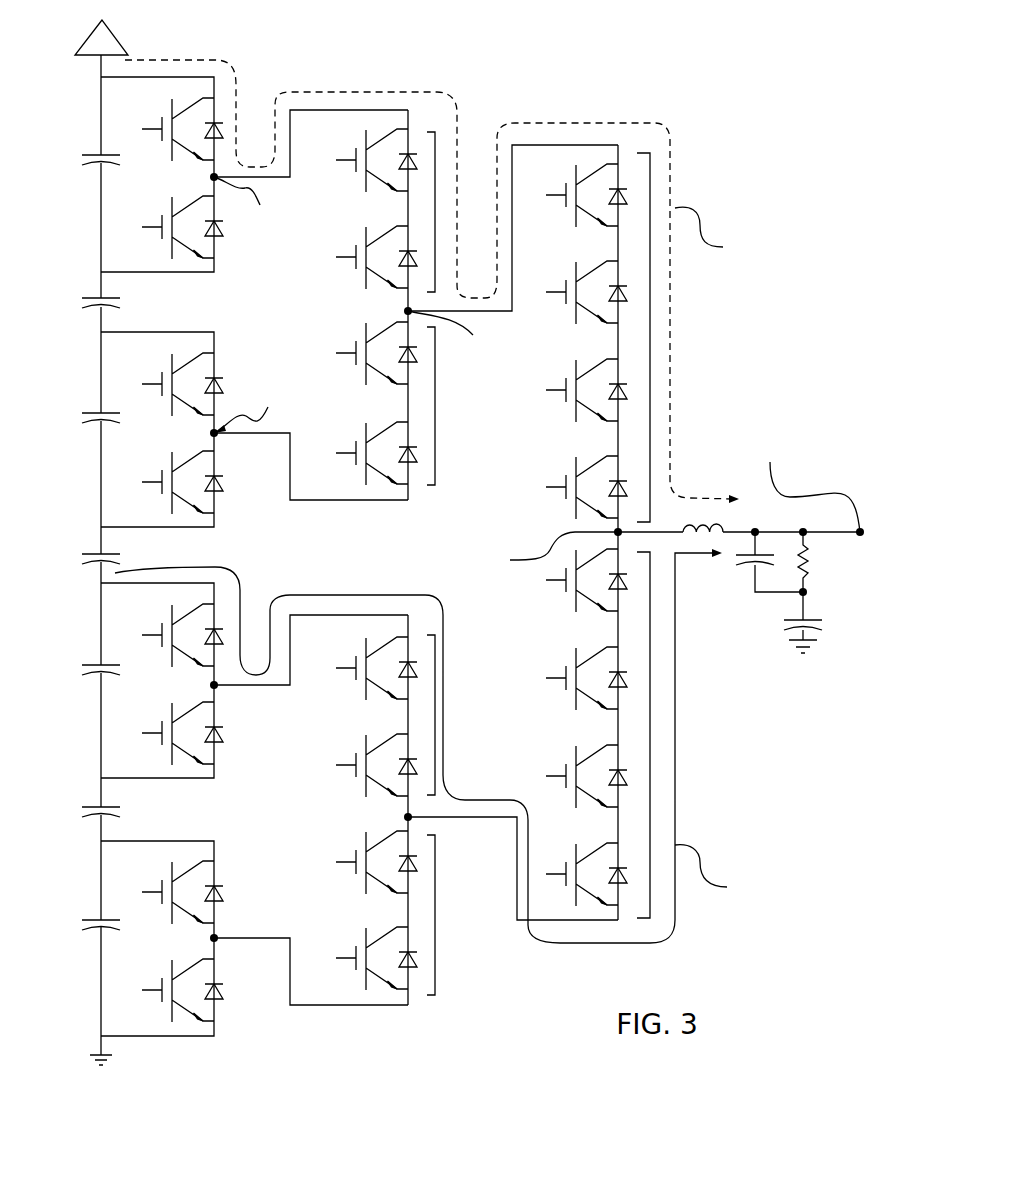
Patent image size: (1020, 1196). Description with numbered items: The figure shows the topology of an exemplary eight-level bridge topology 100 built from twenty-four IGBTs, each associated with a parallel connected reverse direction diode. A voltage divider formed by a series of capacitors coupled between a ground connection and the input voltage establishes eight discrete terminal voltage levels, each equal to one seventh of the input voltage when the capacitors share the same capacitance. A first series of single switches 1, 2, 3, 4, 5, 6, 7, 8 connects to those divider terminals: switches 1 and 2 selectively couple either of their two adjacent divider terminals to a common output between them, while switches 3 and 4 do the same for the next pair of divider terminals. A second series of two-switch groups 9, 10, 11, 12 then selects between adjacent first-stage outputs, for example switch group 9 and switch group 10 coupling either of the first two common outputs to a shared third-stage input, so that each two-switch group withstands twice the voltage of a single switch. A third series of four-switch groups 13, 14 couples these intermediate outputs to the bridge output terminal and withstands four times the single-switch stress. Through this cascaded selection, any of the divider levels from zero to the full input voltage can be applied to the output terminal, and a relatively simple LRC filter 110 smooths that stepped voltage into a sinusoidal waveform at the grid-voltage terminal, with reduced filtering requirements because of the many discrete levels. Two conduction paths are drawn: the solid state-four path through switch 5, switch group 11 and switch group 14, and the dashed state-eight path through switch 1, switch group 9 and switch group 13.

The switch 1 is at (182, 129).
The switch 2 is at (182, 227).
The switch 3 is at (182, 384).
The switch 4 is at (182, 482).
The switch 5 is at (182, 635).
The switch 6 is at (182, 733).
The switch 7 is at (182, 892).
The switch 8 is at (182, 990).
The switch group 9 is at (435, 212).
The switch group 10 is at (435, 407).
The switch group 11 is at (435, 715).
The switch group 12 is at (435, 915).
The switch group 13 is at (650, 337).
The switch group 14 is at (650, 737).
The eight-level bridge topology 100 is at (635, 79).
The filter 110 is at (770, 619).